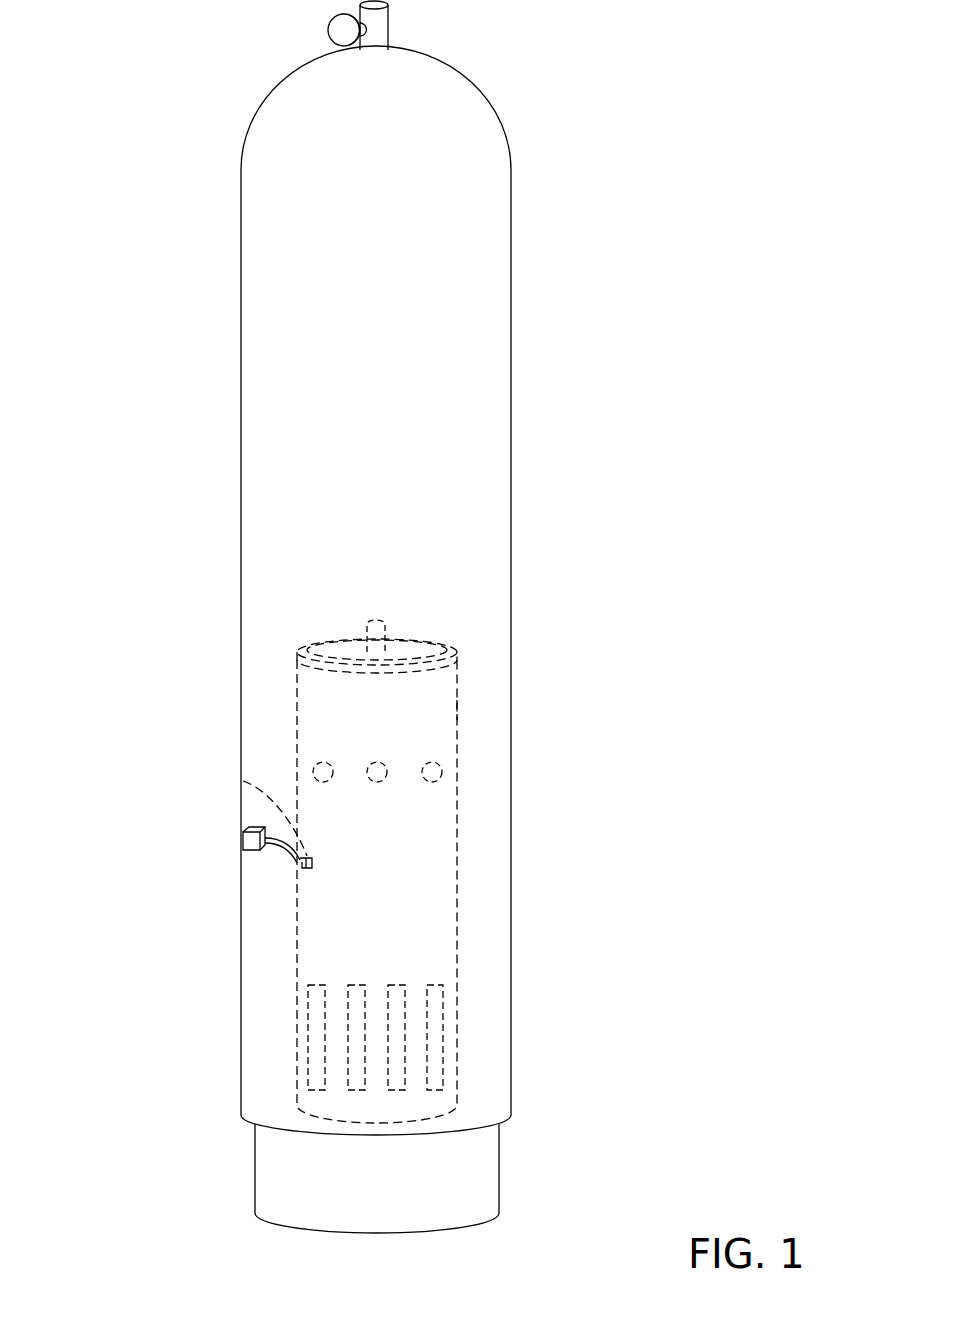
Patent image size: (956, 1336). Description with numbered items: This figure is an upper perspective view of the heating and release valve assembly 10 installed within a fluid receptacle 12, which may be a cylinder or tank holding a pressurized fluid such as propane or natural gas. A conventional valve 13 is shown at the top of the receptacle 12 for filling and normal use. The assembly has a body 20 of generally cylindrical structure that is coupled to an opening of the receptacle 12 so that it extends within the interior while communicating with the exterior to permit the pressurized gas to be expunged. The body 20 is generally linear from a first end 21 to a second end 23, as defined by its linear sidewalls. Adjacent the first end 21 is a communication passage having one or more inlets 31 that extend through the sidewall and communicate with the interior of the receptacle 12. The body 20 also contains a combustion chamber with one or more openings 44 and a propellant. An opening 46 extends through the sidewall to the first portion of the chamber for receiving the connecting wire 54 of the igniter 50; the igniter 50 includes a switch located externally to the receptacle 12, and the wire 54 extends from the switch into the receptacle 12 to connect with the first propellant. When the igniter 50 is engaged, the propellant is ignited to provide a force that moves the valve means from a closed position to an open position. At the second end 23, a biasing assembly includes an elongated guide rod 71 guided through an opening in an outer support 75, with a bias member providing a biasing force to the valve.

The heating and release valve assembly 10 is at (279, 714).
The receptacle 12 is at (241, 478).
The cylinder valve 13 is at (340, 33).
The body 20 is at (458, 833).
The first end 21 is at (288, 1088).
The second end 23 is at (473, 692).
The inlet 31 is at (457, 1088).
The openings 44 is at (448, 776).
The opening 46 is at (241, 779).
The igniter 50 is at (241, 839).
The connecting wire 54 is at (298, 866).
The guide rod 71 is at (387, 632).
The outer support 75 is at (336, 640).